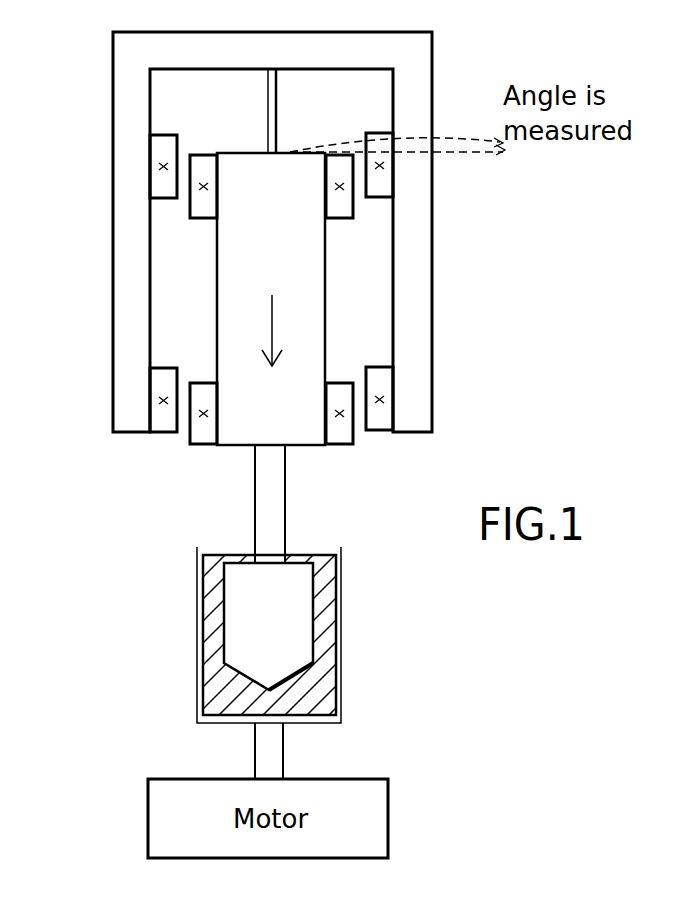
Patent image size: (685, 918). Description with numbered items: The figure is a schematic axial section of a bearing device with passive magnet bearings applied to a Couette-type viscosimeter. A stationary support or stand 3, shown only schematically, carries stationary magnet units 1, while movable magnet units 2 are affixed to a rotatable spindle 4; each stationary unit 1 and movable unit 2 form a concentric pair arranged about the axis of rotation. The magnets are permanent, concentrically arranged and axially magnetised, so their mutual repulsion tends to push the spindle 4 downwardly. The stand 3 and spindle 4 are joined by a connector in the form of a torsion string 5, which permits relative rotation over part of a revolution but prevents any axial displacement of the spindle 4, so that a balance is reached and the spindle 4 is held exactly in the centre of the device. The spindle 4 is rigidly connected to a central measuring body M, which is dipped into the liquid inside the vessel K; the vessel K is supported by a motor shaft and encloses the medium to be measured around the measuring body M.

The stationary magnet unit 1 is at (167, 136).
The movable magnet unit 2 is at (202, 155).
The support or stand 3 is at (433, 302).
The spindle 4 is at (326, 278).
The torsion string 5 is at (277, 88).
The vessel K is at (266, 635).
The measuring body M is at (268, 626).